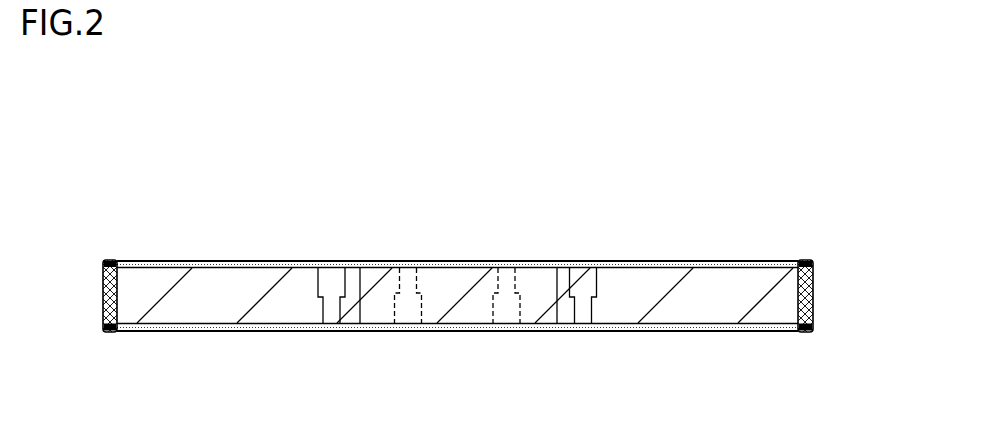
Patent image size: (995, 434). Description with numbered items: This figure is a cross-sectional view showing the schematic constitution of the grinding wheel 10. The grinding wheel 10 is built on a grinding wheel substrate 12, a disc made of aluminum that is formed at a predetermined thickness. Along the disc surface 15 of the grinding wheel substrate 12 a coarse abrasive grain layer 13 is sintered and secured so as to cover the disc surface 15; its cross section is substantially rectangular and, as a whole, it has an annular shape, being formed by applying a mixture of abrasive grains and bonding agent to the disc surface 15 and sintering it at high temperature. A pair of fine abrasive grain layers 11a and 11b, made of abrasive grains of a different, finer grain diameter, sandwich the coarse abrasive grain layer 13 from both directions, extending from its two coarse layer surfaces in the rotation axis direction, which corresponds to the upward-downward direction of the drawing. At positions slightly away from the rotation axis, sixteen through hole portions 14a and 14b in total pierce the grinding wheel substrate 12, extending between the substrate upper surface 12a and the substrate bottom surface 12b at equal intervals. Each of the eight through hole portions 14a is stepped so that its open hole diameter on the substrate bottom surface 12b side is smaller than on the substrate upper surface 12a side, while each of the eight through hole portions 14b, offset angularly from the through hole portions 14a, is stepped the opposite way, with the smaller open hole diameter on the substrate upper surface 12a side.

The grinding wheel 10 is at (265, 145).
The fine abrasive grain layer 11a is at (110, 260).
The fine abrasive grain layer 11b is at (122, 333).
The grinding wheel substrate 12 is at (250, 275).
The substrate upper surface 12a is at (687, 266).
The substrate bottom surface 12b is at (670, 327).
The coarse abrasive grain layer 13 is at (105, 295).
The through hole portion 14a is at (332, 272).
The through hole portion 14b is at (405, 333).
The disc surface 15 is at (105, 317).